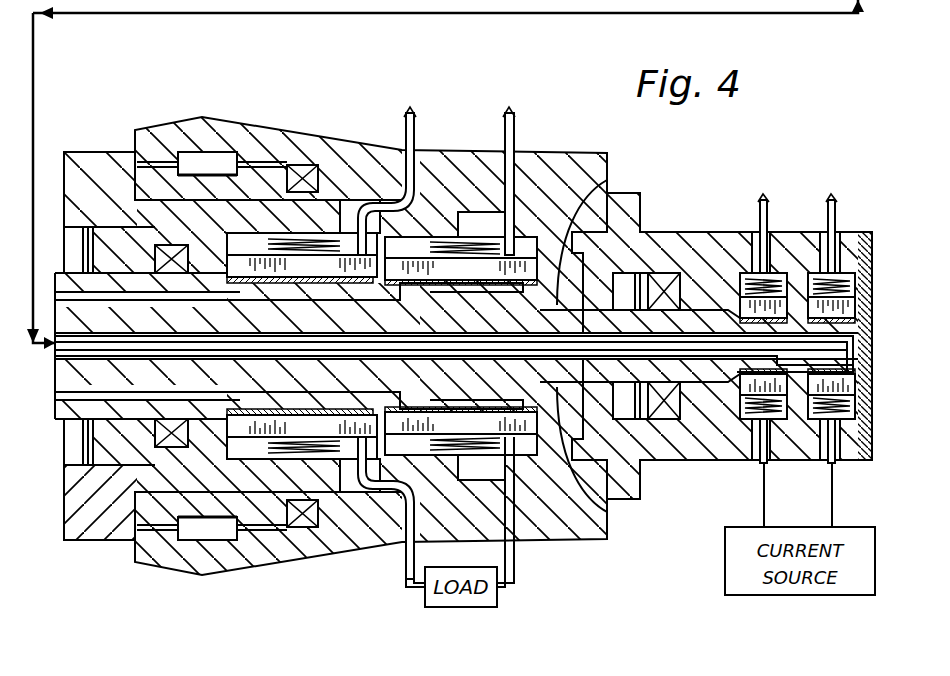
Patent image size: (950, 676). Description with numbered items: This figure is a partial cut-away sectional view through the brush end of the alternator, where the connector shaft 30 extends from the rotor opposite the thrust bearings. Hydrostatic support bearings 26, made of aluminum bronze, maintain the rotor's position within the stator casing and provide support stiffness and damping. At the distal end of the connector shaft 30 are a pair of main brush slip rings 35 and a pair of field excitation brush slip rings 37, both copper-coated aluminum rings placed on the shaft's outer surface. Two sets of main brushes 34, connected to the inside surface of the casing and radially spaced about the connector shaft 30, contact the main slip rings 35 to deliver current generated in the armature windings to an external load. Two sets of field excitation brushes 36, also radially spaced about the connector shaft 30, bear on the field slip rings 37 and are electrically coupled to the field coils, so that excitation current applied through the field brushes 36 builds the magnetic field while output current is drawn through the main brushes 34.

The hydrostatic support bearings 26 is at (212, 152).
The connector shaft 30 is at (622, 171).
The main brushes 34 is at (330, 272).
The main brush slip rings 35 is at (250, 273).
The field excitation brushes 36 is at (802, 298).
The field excitation brush slip rings 37 is at (735, 305).